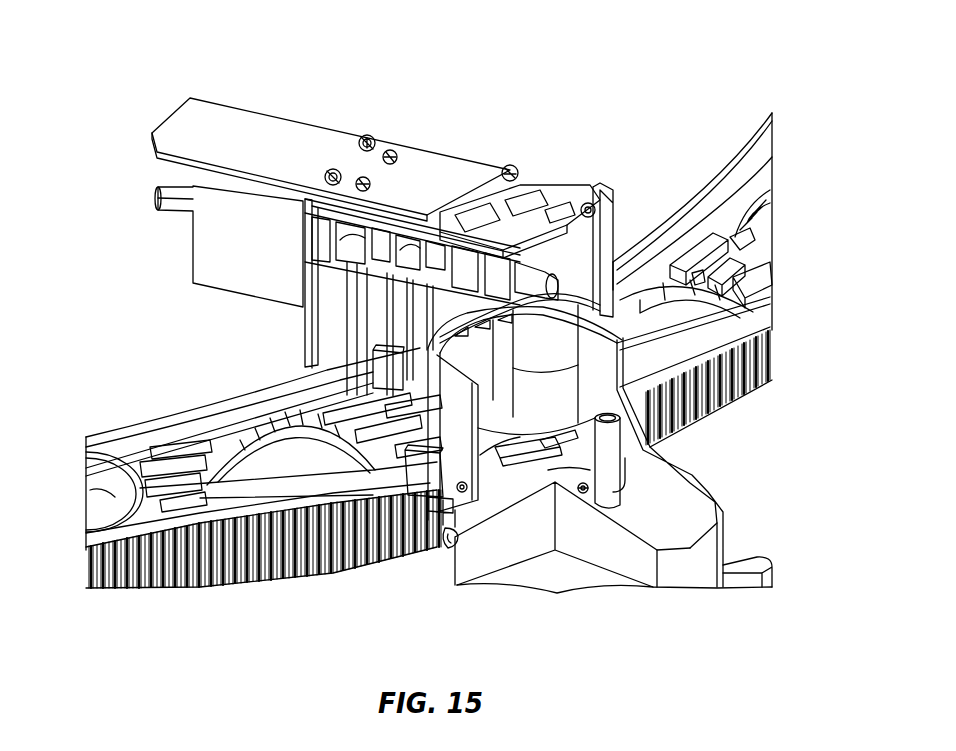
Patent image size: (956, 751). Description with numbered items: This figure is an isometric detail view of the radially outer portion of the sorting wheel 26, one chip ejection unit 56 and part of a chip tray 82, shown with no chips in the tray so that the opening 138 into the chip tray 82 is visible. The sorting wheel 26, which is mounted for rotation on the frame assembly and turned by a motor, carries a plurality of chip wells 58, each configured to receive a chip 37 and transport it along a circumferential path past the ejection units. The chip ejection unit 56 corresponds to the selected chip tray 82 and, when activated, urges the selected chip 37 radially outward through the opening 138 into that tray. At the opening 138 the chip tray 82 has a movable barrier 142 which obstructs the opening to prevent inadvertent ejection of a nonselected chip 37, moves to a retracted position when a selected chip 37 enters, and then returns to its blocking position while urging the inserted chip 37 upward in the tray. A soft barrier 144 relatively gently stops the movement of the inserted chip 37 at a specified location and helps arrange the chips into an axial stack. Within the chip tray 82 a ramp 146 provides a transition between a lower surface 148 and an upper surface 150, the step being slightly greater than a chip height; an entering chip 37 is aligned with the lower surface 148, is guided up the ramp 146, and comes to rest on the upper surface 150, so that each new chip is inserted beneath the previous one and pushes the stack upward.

The chip ejection unit 56 is at (424, 147).
The chip 37 is at (85, 493).
The chip well 58 is at (257, 497).
The sorting wheel 26 is at (356, 597).
The movable barrier 142 is at (452, 540).
The lower surface 148 is at (525, 472).
The upper surface 150 is at (580, 471).
The soft barrier 144 is at (612, 467).
The opening 138 is at (548, 409).
The ramp 146 is at (623, 418).
The chip tray 82 is at (703, 467).